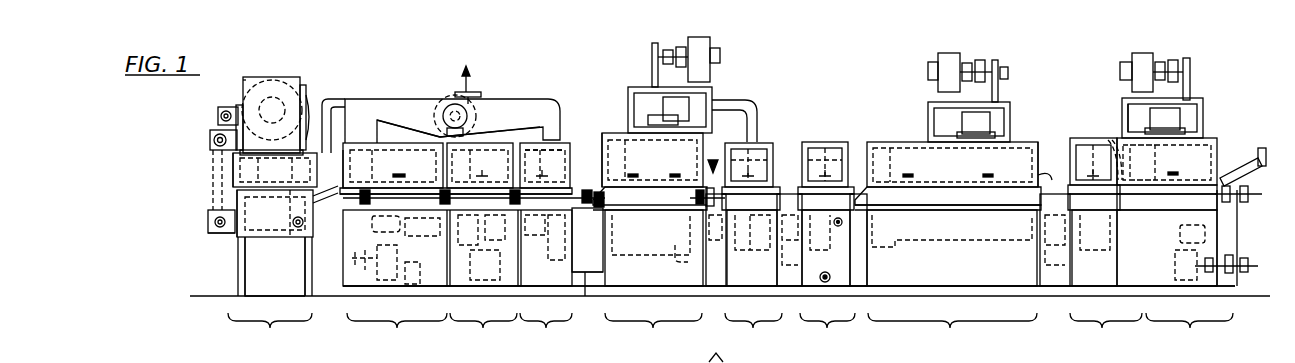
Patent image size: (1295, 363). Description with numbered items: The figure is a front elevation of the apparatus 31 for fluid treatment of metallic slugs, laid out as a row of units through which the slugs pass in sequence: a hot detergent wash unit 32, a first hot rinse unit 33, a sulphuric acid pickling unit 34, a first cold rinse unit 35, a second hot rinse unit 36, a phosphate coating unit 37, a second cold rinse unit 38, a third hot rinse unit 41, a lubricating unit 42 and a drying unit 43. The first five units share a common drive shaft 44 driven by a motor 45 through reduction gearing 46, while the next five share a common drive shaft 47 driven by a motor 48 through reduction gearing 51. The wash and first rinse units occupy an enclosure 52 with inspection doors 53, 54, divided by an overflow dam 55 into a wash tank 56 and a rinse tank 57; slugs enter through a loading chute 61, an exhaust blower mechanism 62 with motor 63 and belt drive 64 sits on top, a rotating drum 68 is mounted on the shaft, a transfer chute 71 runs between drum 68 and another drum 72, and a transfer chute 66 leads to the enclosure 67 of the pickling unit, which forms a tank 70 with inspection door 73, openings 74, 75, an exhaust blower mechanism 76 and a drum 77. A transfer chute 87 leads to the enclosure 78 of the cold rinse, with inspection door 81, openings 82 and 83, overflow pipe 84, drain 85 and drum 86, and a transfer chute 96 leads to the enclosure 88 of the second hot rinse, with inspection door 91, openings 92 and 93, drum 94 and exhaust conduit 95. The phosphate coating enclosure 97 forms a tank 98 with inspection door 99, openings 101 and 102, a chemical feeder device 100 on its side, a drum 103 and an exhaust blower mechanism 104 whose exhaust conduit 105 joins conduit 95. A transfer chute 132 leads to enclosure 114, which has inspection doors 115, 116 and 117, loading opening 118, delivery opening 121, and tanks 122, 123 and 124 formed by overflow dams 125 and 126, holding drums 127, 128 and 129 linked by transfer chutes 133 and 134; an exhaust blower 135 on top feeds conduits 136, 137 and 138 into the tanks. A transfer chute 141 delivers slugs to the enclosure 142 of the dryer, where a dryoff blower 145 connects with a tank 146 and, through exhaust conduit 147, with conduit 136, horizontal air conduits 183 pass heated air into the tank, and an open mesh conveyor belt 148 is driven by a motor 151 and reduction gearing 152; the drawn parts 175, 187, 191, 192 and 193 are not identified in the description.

The apparatus for fluid treatment of metallic slugs 31 is at (716, 345).
The hot detergent wash unit 32 is at (1189, 329).
The first hot rinse unit 33 is at (1106, 329).
The sulphuric acid pickling unit 34 is at (952, 329).
The first cold rinse unit 35 is at (827, 329).
The second hot rinse unit 36 is at (753, 329).
The phosphate coating unit 37 is at (653, 329).
The second cold rinse unit 38 is at (546, 329).
The third hot rinse unit 41 is at (483, 329).
The lubricating unit 42 is at (397, 329).
The drying unit 43 is at (270, 329).
The common drive shaft 44 is at (1052, 196).
The motor 45 is at (1167, 197).
The reduction gearing 46 is at (1235, 296).
The common drive shaft 47 is at (588, 243).
The motor 48 is at (393, 174).
The reduction gearing 51 is at (374, 262).
The enclosure 52 is at (1225, 126).
The inspection door 53 is at (1205, 150).
The inspection door 54 is at (1098, 148).
The overflow dam 55 is at (1130, 248).
The wash tank 56 is at (1187, 248).
The rinse tank 57 is at (1094, 235).
The loading chute 61 is at (1238, 170).
The exhaust blower mechanism 62 is at (1178, 45).
The motor 63 is at (1172, 116).
The belt drive 64 is at (1192, 64).
The transfer chute 66 is at (1040, 175).
The enclosure 67 is at (1036, 145).
The rotating drum 68 is at (1128, 112).
The tank 70 is at (952, 248).
The transfer chute 71 is at (1122, 160).
The drum 72 is at (1080, 254).
The inspection door 73 is at (952, 164).
The loading opening 74 is at (1002, 172).
The delivery opening 75 is at (880, 193).
The exhaust blower mechanism 76 is at (948, 56).
The drum 77 is at (913, 238).
The enclosure 78 is at (814, 140).
The inspection door 81 is at (828, 150).
The loading opening 82 is at (856, 186).
The delivery opening 83 is at (789, 240).
The overflow pipe 84 is at (838, 228).
The drain 85 is at (825, 283).
The drum 86 is at (787, 254).
The transfer chute 87 is at (877, 186).
The enclosure 88 is at (765, 143).
The inspection door 91 is at (762, 152).
The loading opening 92 is at (752, 231).
The delivery opening 93 is at (716, 240).
The drum 94 is at (752, 248).
The exhaust conduit 95 is at (755, 106).
The transfer chute 96 is at (790, 190).
The enclosure 97 is at (605, 258).
The tank 98 is at (654, 248).
The inspection door 99 is at (652, 160).
The chemical feeder device 100 is at (716, 158).
The loading opening 101 is at (700, 206).
The delivery opening 102 is at (614, 193).
The drum 103 is at (687, 255).
The exhaust blower mechanism 104 is at (690, 42).
The exhaust conduit 105 is at (644, 100).
The enclosure 114 is at (500, 98).
The inspection door 115 is at (552, 172).
The inspection door 116 is at (510, 150).
The inspection door 117 is at (396, 126).
The loading opening 118 is at (566, 190).
The delivery opening 121 is at (344, 152).
The tank 122 is at (548, 250).
The tank 123 is at (512, 272).
The tank 124 is at (422, 274).
The overflow dam 125 is at (560, 296).
The overflow dam 126 is at (452, 255).
The drum 127 is at (542, 241).
The drum 128 is at (500, 235).
The drum 129 is at (412, 238).
The transfer chute 132 is at (598, 188).
The transfer chute 133 is at (540, 160).
The transfer chute 134 is at (413, 173).
The exhaust blower 135 is at (455, 96).
The exhaust conduit 136 is at (362, 104).
The conduit 137 is at (442, 115).
The conduit 138 is at (514, 124).
The transfer chute 141 is at (310, 196).
The enclosure 142 is at (237, 198).
The dryoff blower 145 is at (275, 77).
The tank 146 is at (233, 183).
The exhaust conduit 147 is at (326, 100).
The open mesh conveyor belt 148 is at (275, 266).
The motor 151 is at (218, 115).
The reduction gearing 152 is at (210, 138).
The motor housing 175 is at (243, 82).
The horizontal air conduits 183 is at (275, 170).
The roller 187 is at (208, 222).
The plate 191 is at (208, 228).
The leg 192 is at (289, 266).
The shaft 193 is at (338, 192).